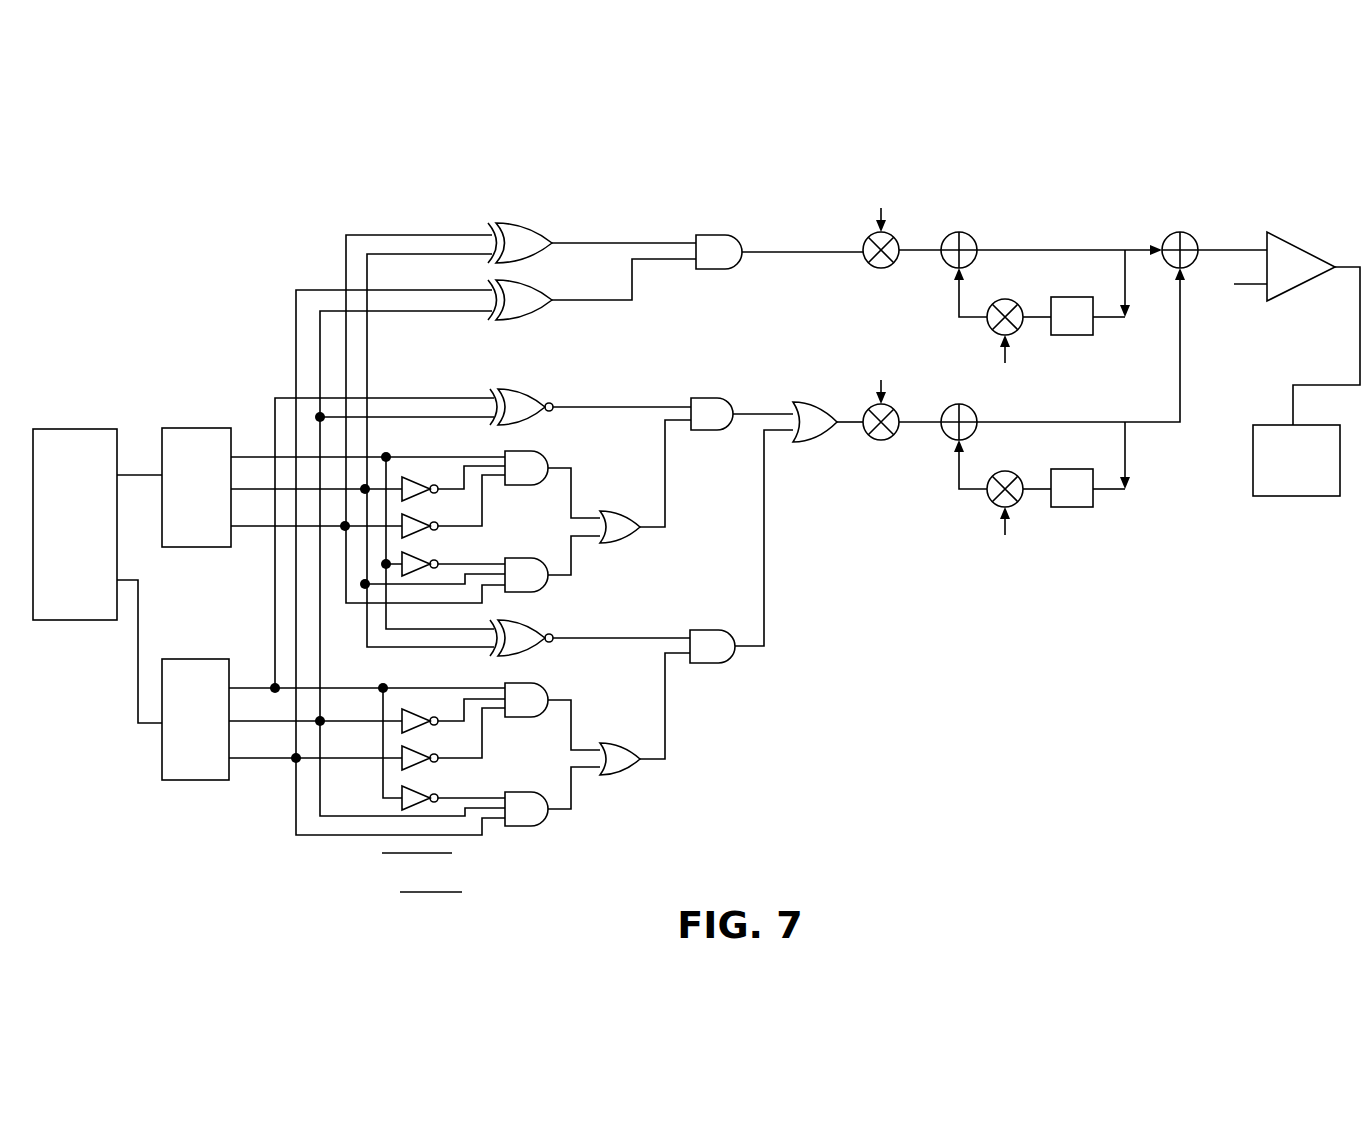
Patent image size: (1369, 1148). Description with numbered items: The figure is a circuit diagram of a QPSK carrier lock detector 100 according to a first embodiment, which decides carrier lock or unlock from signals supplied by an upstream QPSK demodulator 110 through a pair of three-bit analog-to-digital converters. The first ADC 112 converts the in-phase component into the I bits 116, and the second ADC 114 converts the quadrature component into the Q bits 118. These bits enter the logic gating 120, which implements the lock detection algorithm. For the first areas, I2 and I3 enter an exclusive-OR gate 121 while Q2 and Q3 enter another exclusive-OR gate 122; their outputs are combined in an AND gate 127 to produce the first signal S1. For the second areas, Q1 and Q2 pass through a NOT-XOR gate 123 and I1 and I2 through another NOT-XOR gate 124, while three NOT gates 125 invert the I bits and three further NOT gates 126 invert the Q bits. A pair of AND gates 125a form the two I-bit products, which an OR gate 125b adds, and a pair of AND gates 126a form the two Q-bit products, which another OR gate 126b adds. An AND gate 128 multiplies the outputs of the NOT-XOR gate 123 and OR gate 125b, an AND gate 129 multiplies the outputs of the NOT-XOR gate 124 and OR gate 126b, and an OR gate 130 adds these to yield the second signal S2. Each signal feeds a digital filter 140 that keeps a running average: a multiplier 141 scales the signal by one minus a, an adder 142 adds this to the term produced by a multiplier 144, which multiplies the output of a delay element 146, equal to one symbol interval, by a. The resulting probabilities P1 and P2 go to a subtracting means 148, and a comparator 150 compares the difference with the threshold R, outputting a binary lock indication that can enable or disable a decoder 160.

The QPSK carrier lock detector 100 is at (198, 316).
The QPSK demodulator 110 is at (72, 452).
The first 3-bit ADC 112 is at (197, 440).
The second 3-bit ADC 114 is at (158, 755).
The I bits 116 is at (259, 455).
The Q bits 118 is at (270, 760).
The logic gating 120 is at (548, 195).
The exclusive-OR gate 121 is at (522, 225).
The exclusive-OR gate 122 is at (533, 318).
The NOT-XOR gate 123 is at (525, 388).
The NOT-XOR gate 124 is at (528, 660).
The NOT gates 125 is at (400, 547).
The AND gates 125a is at (510, 487).
The OR gate 125b is at (632, 540).
The NOT gates 126 is at (400, 788).
The AND gates 126a is at (510, 717).
The OR gate 126b is at (632, 775).
The AND gate producing S1 127 is at (733, 267).
The AND gate 128 is at (713, 397).
The AND gate 129 is at (722, 662).
The OR gate 130 is at (812, 443).
The digital filter 140 is at (1090, 172).
The multiplier 141 is at (863, 243).
The adder 142 is at (970, 238).
The multiplier 144 is at (1020, 500).
The delay element 146 is at (1077, 507).
The subtracting means 148 is at (1195, 232).
The comparator 150 is at (1300, 265).
The decoder 160 is at (1296, 460).